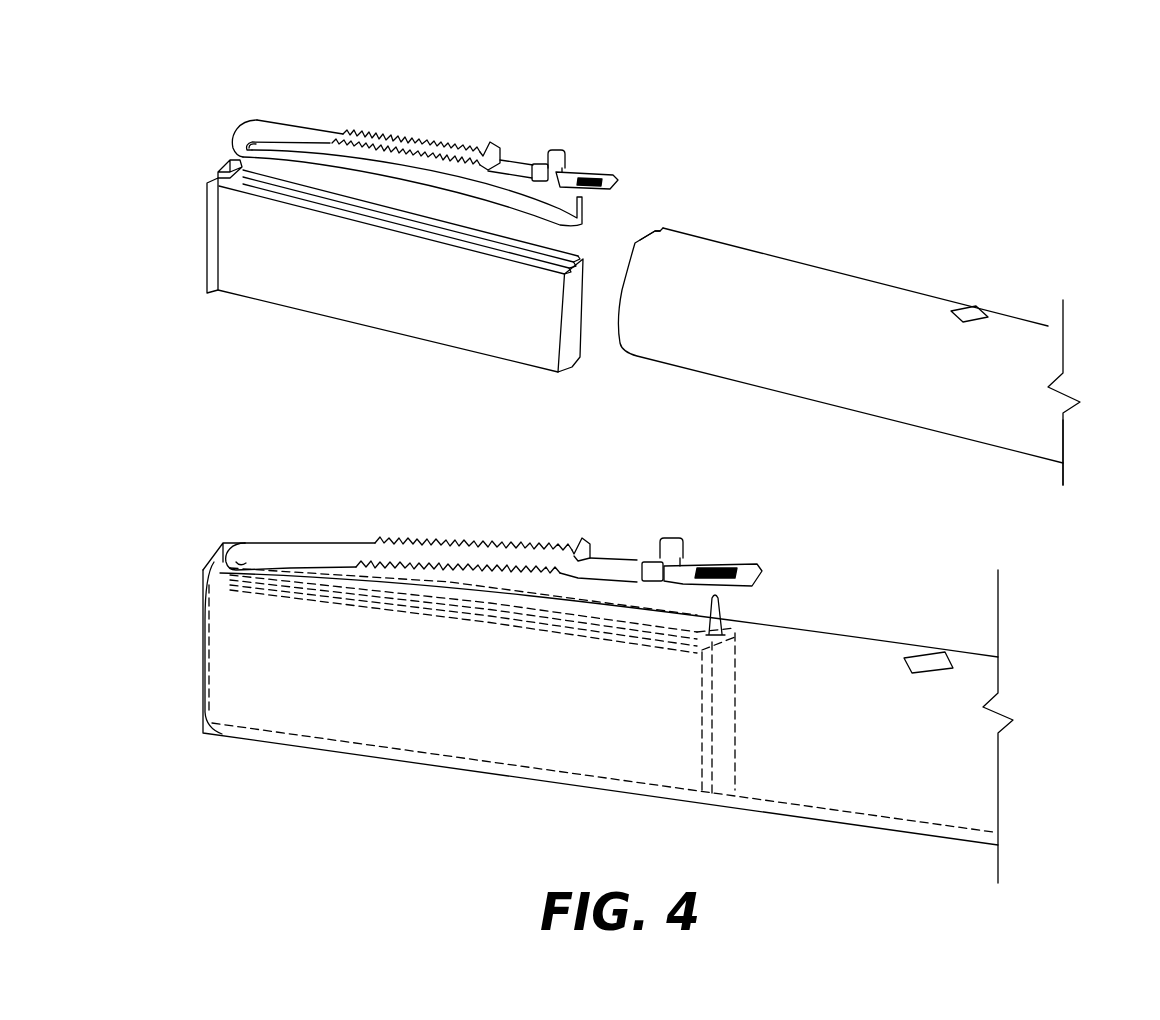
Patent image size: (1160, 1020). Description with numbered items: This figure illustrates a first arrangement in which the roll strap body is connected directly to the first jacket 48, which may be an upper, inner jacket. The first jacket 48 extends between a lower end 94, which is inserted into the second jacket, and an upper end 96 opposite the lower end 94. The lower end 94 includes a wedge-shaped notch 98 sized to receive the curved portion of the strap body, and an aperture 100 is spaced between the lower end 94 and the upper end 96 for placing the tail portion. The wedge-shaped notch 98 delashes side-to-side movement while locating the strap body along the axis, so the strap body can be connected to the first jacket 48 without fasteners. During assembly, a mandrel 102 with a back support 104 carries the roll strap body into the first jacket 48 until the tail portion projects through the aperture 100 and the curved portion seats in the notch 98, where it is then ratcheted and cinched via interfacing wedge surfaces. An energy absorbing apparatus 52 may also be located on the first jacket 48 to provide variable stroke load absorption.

The energy absorbing apparatus 52 is at (390, 110).
The back support 104 is at (212, 172).
The mandrel 102 is at (275, 278).
The lower end 94 is at (640, 240).
The notch 98 is at (657, 230).
The aperture 100 is at (972, 306).
The first jacket 48 is at (1057, 331).
The upper end 96 is at (1058, 436).